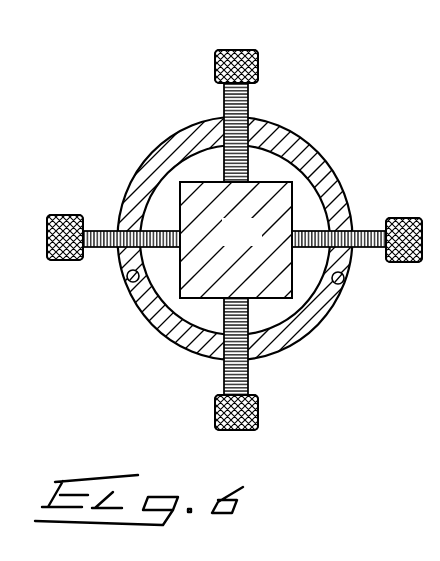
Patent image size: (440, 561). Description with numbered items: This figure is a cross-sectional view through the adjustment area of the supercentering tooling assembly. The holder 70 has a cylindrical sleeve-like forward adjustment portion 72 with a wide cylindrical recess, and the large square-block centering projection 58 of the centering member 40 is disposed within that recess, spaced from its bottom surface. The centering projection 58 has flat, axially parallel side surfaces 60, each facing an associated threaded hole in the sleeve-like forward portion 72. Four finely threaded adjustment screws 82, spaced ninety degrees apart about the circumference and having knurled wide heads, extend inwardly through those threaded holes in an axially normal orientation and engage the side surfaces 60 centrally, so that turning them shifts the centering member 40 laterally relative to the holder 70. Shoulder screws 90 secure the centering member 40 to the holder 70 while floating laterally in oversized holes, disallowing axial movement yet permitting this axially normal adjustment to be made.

The centering member 40 is at (176, 289).
The centering projection 58 is at (258, 244).
The side surfaces 60 is at (273, 181).
The holder 70 is at (165, 134).
The sleeve-like forward adjustment portion 72 is at (300, 143).
The adjustment screws 82 is at (259, 72).
The shoulder screws 90 is at (127, 277).